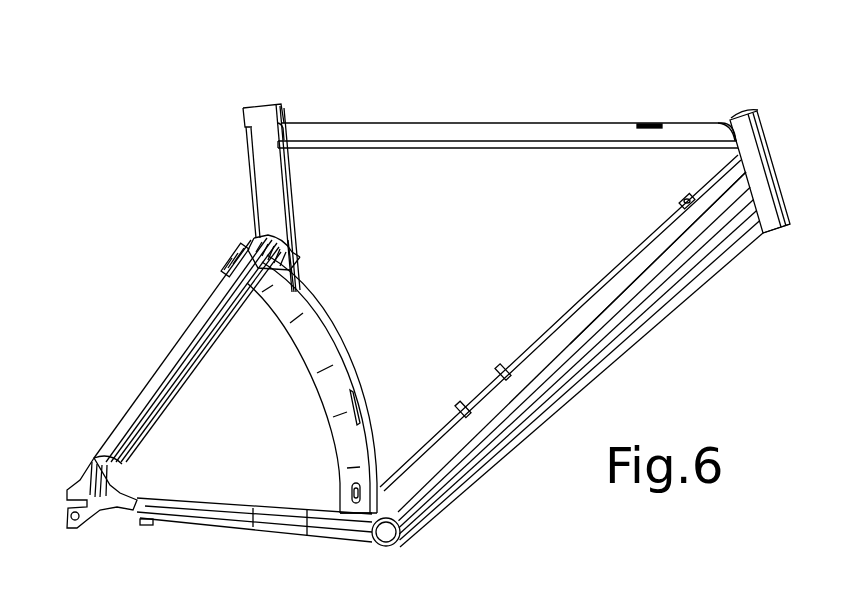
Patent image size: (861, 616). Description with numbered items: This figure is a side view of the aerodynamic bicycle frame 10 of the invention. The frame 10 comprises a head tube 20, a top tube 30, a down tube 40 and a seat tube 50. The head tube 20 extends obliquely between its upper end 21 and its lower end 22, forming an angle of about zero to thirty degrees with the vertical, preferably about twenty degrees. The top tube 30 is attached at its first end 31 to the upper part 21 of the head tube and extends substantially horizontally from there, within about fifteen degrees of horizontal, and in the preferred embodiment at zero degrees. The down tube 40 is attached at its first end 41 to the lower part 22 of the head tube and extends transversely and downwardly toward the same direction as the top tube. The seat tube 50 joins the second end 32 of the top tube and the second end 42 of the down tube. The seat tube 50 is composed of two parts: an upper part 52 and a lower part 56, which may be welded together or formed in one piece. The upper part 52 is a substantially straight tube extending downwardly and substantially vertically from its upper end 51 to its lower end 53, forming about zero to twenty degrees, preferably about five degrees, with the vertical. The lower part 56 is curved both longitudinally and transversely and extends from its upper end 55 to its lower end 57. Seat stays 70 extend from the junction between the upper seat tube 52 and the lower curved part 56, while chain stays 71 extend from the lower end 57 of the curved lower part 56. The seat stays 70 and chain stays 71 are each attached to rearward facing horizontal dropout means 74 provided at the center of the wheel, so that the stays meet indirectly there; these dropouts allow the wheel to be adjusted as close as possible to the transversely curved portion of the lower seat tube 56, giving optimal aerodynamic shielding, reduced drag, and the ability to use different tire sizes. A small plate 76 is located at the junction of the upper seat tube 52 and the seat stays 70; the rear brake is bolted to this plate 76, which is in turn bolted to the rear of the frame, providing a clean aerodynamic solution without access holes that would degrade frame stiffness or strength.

The bicycle frame 10 is at (581, 107).
The head tube 20 is at (772, 167).
The upper end of head tube 21 is at (760, 110).
The lower end of head tube 22 is at (779, 229).
The top tube 30 is at (466, 123).
The first end of top tube 31 is at (720, 133).
The second end of top tube 32 is at (288, 128).
The down tube 40 is at (625, 328).
The first end of down tube 41 is at (724, 228).
The second end of down tube 42 is at (449, 489).
The seat tube 50 is at (372, 323).
The upper end of upper seat tube 51 is at (248, 123).
The upper part of seat tube 52 is at (295, 186).
The lower end of upper seat tube 53 is at (300, 248).
The upper end of lower seat tube 55 is at (228, 283).
The lower part of seat tube 56 is at (376, 424).
The lower end of lower seat tube 57 is at (340, 516).
The seat stays 70 is at (163, 365).
The chain stays 71 is at (192, 525).
The rearward facing horizontal dropout means 74 is at (85, 487).
The plate 76 is at (217, 236).